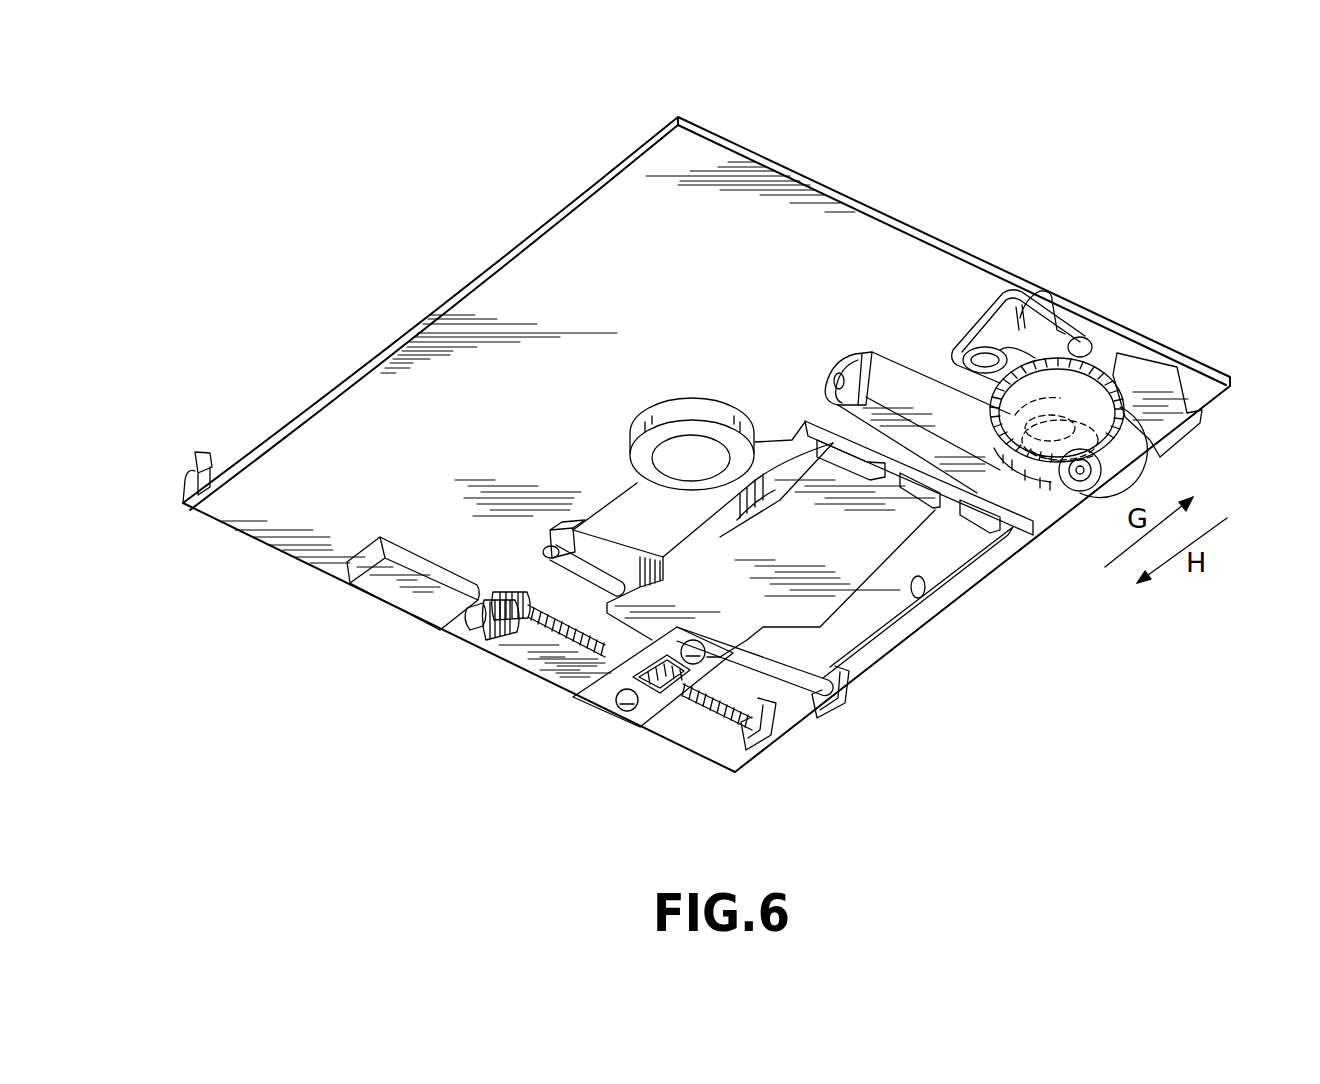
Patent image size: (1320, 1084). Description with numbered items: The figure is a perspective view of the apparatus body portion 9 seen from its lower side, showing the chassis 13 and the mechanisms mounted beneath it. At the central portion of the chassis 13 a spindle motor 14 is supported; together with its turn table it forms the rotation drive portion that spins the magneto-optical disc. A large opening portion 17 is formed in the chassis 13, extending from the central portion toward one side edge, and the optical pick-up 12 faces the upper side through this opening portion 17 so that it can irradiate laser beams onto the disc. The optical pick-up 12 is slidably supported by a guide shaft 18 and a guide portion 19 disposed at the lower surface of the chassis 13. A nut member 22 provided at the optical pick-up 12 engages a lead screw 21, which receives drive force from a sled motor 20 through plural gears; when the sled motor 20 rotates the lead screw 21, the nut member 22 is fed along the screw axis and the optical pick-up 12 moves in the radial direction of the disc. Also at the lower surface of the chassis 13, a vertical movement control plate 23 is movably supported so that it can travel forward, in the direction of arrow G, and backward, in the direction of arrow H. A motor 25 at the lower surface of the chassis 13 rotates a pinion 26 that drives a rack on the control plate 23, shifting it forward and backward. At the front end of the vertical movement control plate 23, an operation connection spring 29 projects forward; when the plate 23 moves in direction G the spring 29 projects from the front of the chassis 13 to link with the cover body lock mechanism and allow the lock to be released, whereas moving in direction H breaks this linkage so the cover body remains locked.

The apparatus body portion 9 is at (487, 291).
The optical pick-up 12 is at (840, 597).
The chassis 13 is at (592, 202).
The spindle motor 14 is at (677, 403).
The opening portion 17 is at (922, 595).
The guide shaft 18 is at (797, 677).
The guide portion 19 is at (1003, 527).
The sled motor 20 is at (410, 563).
The lead screw 21 is at (727, 717).
The nut member 22 is at (660, 690).
The vertical movement control plate 23 is at (1157, 383).
The motor 25 is at (900, 367).
The pinion 26 is at (1107, 380).
The operation connection spring 29 is at (1043, 292).